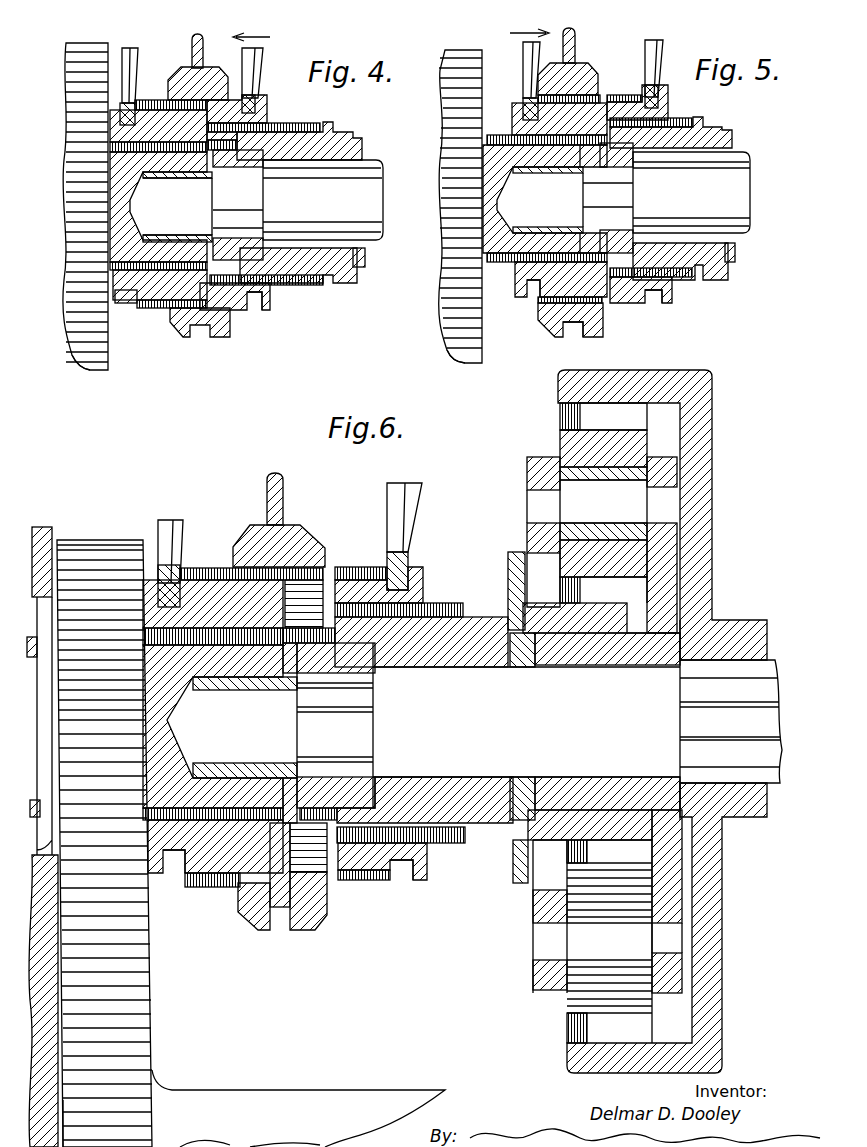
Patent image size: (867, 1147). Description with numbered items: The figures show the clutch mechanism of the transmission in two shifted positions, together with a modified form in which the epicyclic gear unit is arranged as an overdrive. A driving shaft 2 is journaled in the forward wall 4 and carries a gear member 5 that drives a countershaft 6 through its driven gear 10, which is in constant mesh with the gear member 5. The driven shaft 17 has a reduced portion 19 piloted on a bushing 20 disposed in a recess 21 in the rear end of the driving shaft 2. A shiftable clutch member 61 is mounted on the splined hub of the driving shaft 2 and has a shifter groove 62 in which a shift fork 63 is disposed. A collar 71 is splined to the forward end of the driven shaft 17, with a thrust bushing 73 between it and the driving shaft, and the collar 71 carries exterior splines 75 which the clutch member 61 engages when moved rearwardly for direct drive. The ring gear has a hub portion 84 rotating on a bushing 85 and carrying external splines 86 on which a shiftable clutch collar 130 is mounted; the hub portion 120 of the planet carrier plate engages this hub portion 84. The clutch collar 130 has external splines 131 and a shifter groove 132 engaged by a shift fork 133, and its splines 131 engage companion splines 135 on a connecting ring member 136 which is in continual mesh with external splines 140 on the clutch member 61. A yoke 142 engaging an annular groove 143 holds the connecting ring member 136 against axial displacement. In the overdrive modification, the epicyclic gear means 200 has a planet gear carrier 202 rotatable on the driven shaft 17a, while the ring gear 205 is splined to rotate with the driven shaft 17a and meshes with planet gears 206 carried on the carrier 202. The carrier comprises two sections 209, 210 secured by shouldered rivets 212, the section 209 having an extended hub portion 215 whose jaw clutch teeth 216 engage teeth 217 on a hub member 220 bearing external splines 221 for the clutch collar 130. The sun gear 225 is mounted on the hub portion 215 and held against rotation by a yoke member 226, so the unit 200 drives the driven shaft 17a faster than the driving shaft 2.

In FIG. 6, the driving shaft 2 is at (36, 718).
In FIG. 6, the forward wall 4 is at (45, 527).
In FIG. 4, the gear member 5 is at (75, 105).
In FIG. 5, the gear member 5 is at (452, 191).
In FIG. 6, the gear member 5 is at (95, 545).
In FIG. 6, the countershaft 6 is at (272, 1095).
In FIG. 4, the driven gear 10 is at (86, 360).
In FIG. 5, the driven gear 10 is at (455, 350).
In FIG. 6, the driven gear 10 is at (140, 1023).
In FIG. 4, the driven shaft 17 is at (360, 168).
In FIG. 5, the driven shaft 17 is at (735, 186).
In FIG. 6, the driven shaft 17a is at (770, 658).
In FIG. 4, the reduced portion 19 is at (120, 222).
In FIG. 5, the reduced portion 19 is at (545, 199).
In FIG. 6, the reduced portion 19 is at (205, 719).
In FIG. 4, the bushing 20 is at (185, 230).
In FIG. 5, the bushing 20 is at (558, 226).
In FIG. 6, the bushing 20 is at (230, 762).
In FIG. 4, the recess 21 is at (110, 195).
In FIG. 4, the shiftable clutch member 61 is at (152, 101).
In FIG. 5, the shiftable clutch member 61 is at (520, 125).
In FIG. 6, the shiftable clutch member 61 is at (220, 582).
In FIG. 4, the shifter groove 62 is at (128, 304).
In FIG. 5, the shifter groove 62 is at (524, 298).
In FIG. 6, the shifter groove 62 is at (171, 861).
In FIG. 4, the shift fork 63 is at (127, 50).
In FIG. 5, the shift fork 63 is at (528, 62).
In FIG. 6, the shift fork 63 is at (165, 535).
In FIG. 4, the collar 71 is at (212, 176).
In FIG. 6, the collar 71 is at (384, 778).
In FIG. 5, the thrust bushing 73 is at (576, 165).
In FIG. 4, the exterior splines 75 is at (248, 130).
In FIG. 6, the exterior splines 75 is at (333, 830).
In FIG. 4, the hub portion 84 is at (305, 135).
In FIG. 5, the hub portion 84 is at (700, 130).
In FIG. 4, the bushing 85 is at (292, 252).
In FIG. 5, the bushing 85 is at (706, 264).
In FIG. 4, the external splines 86 is at (312, 283).
In FIG. 5, the external splines 86 is at (680, 280).
In FIG. 4, the hub portion 120 is at (362, 262).
In FIG. 5, the hub portion 120 is at (736, 262).
In FIG. 4, the shiftable clutch collar 130 is at (270, 109).
In FIG. 5, the shiftable clutch collar 130 is at (672, 105).
In FIG. 6, the shiftable clutch collar 130 is at (420, 580).
In FIG. 4, the external splines 131 is at (238, 306).
In FIG. 5, the external splines 131 is at (625, 95).
In FIG. 6, the external splines 131 is at (350, 568).
In FIG. 4, the shifter groove 132 is at (258, 304).
In FIG. 5, the shifter groove 132 is at (653, 302).
In FIG. 6, the shifter groove 132 is at (400, 881).
In FIG. 4, the shift fork 133 is at (262, 62).
In FIG. 5, the shift fork 133 is at (660, 45).
In FIG. 6, the shift fork 133 is at (415, 500).
In FIG. 6, the companion splines 135 is at (325, 552).
In FIG. 4, the connecting ring member 136 is at (230, 333).
In FIG. 5, the connecting ring member 136 is at (595, 76).
In FIG. 6, the connecting ring member 136 is at (305, 530).
In FIG. 4, the external splines 140 is at (160, 309).
In FIG. 6, the external splines 140 is at (196, 568).
In FIG. 4, the yoke 142 is at (193, 42).
In FIG. 5, the yoke 142 is at (576, 40).
In FIG. 6, the yoke 142 is at (268, 497).
In FIG. 4, the annular groove 143 is at (205, 331).
In FIG. 5, the annular groove 143 is at (575, 331).
In FIG. 6, the epicyclic gear means 200 is at (681, 373).
In FIG. 6, the planet gear carrier 202 is at (683, 575).
In FIG. 6, the ring gear 205 is at (706, 441).
In FIG. 6, the planet gears 206 is at (560, 445).
In FIG. 6, the section 209 is at (690, 471).
In FIG. 6, the section 210 is at (555, 473).
In FIG. 6, the shouldered rivets 212 is at (598, 920).
In FIG. 6, the hub portion 215 is at (588, 658).
In FIG. 6, the jaw clutch teeth 216 is at (508, 662).
In FIG. 6, the teeth 217 is at (553, 667).
In FIG. 6, the hub member 220 is at (470, 619).
In FIG. 6, the external splines 221 is at (450, 842).
In FIG. 6, the sun gear 225 is at (628, 625).
In FIG. 6, the yoke member 226 is at (517, 565).